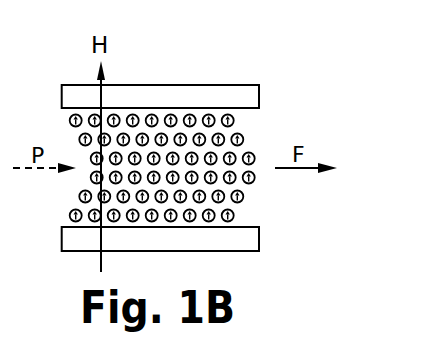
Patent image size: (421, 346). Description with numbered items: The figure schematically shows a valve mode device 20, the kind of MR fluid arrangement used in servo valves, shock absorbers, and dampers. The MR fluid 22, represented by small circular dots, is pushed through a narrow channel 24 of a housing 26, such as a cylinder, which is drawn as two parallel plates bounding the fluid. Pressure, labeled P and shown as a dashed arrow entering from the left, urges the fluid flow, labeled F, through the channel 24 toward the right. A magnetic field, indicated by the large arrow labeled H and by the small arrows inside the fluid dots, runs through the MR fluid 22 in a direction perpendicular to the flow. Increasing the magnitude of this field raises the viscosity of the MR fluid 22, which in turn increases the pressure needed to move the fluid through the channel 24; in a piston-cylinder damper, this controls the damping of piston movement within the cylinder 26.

The valve mode device 20 is at (214, 132).
The MR fluid 22 is at (183, 168).
The narrow channel 24 is at (284, 200).
The housing 26 is at (153, 95).